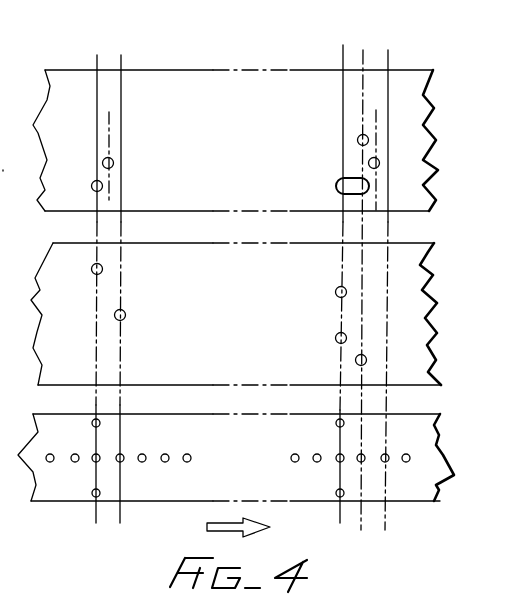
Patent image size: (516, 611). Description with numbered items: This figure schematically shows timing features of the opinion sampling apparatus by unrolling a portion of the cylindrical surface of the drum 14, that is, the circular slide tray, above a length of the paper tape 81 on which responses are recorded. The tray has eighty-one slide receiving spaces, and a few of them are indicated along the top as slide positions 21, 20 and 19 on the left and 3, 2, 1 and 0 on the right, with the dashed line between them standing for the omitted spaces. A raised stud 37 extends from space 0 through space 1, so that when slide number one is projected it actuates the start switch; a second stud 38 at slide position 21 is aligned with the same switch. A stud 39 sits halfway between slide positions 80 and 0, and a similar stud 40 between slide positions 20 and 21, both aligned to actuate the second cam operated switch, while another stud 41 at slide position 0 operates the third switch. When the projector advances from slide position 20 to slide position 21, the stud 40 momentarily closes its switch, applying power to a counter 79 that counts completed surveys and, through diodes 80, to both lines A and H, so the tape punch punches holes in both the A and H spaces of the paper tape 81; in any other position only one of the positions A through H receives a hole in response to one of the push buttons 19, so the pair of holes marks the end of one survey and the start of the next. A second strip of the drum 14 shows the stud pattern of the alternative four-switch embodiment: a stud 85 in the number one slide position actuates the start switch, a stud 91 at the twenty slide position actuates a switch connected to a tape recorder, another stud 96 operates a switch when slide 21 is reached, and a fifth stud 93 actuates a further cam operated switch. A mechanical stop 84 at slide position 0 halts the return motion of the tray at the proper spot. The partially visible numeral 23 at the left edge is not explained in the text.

The drum 14 is at (430, 70).
The paper tape 81 is at (410, 499).
The slide position 21 is at (95, 274).
The slide position 20 is at (121, 274).
The push buttons 19 is at (291, 33).
The column position 3 is at (295, 244).
The column position 2 is at (318, 244).
The slide position 1 is at (342, 274).
The slide position 0 is at (363, 278).
The diodes 80 is at (388, 278).
The counter 79 is at (415, 244).
The stud 40 is at (113, 160).
The second stud 38 is at (103, 187).
The stud 41 is at (357, 139).
The stud 39 is at (368, 163).
The raised stud 37 is at (336, 186).
The tape edge 23 is at (6, 182).
The stud 96 is at (95, 276).
The stud 91 is at (127, 313).
The fifth stud 93 is at (337, 289).
The stud 85 is at (337, 335).
The mechanical stop 84 is at (355, 361).
The line A / tape position A is at (100, 424).
The line H / tape position H is at (100, 492).